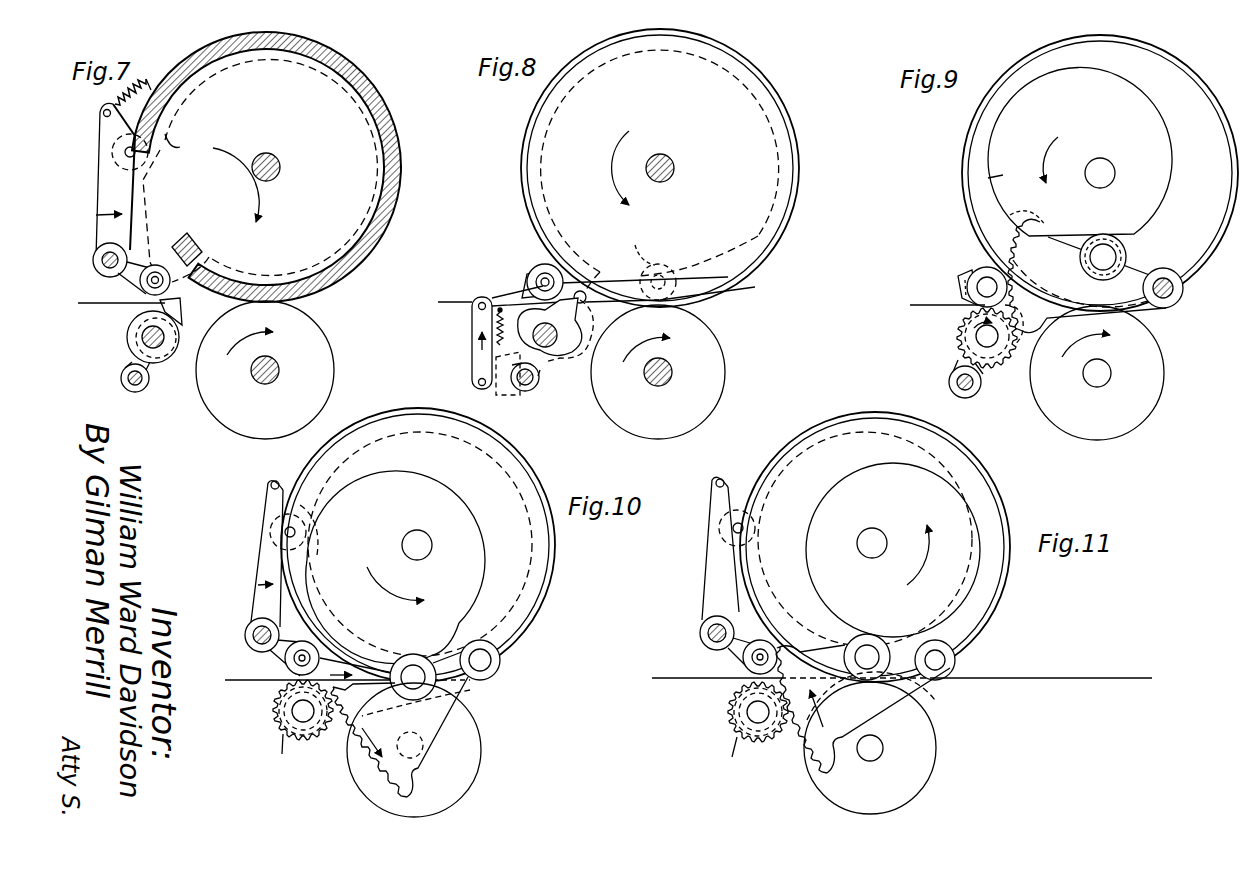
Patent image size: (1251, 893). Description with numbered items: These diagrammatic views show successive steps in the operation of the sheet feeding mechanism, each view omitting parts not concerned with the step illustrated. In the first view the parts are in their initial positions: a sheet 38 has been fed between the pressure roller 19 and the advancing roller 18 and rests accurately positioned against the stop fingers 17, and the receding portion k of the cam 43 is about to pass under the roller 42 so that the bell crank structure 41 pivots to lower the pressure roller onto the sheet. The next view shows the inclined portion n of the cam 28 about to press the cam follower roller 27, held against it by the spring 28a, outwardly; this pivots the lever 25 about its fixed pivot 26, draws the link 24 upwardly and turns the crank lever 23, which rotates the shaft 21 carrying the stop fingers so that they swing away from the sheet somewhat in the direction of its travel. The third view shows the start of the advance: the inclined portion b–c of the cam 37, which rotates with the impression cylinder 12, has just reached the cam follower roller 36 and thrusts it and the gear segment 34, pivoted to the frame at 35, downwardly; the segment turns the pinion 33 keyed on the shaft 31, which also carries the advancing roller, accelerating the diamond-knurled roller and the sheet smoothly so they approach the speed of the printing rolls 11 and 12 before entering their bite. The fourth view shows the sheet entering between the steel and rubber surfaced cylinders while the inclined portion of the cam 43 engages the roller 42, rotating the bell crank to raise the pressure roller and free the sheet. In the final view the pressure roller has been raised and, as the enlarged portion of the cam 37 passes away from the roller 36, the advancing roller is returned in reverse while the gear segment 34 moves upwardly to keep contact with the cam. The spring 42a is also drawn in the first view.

In FIG. 7, the printing roll 11 is at (332, 338).
In FIG. 8, the printing roll 11 is at (726, 362).
In FIG. 9, the printing roll 11 is at (1165, 361).
In FIG. 10, the printing roll 11 is at (481, 752).
In FIG. 11, the printing roll 11 is at (936, 748).
In FIG. 7, the impression cylinder 12 is at (401, 178).
In FIG. 8, the impression cylinder 12 is at (799, 174).
In FIG. 9, the impression cylinder 12 is at (1200, 258).
In FIG. 10, the impression cylinder 12 is at (553, 565).
In FIG. 11, the impression cylinder 12 is at (992, 622).
In FIG. 7, the stop fingers 17 is at (180, 308).
In FIG. 8, the stop fingers 17 is at (598, 330).
In FIG. 7, the advancing roller 18 is at (127, 342).
In FIG. 9, the advancing roller 18 is at (957, 322).
In FIG. 11, the advancing roller 18 is at (728, 690).
In FIG. 7, the pressure roller 19 is at (138, 286).
In FIG. 8, the pressure roller 19 is at (538, 266).
In FIG. 9, the pressure roller 19 is at (977, 270).
In FIG. 10, the pressure roller 19 is at (284, 668).
In FIG. 11, the pressure roller 19 is at (743, 668).
In FIG. 8, the shaft 21 is at (538, 390).
In FIG. 9, the shaft 21 is at (948, 384).
In FIG. 8, the crank lever 23 is at (510, 396).
In FIG. 8, the link 24 is at (472, 364).
In FIG. 8, the lever 25 is at (506, 297).
In FIG. 8, the pivot 26 is at (581, 290).
In FIG. 8, the cam follower roller 27 is at (690, 290).
In FIG. 8, the cam 28 is at (770, 136).
In FIG. 8, the spring 28a is at (490, 336).
In FIG. 9, the shaft 31 is at (976, 338).
In FIG. 10, the shaft 31 is at (293, 712).
In FIG. 11, the shaft 31 is at (748, 716).
In FIG. 9, the pinion 33 is at (968, 356).
In FIG. 10, the pinion 33 is at (305, 740).
In FIG. 11, the pinion 33 is at (760, 745).
In FIG. 9, the gear segment 34 is at (1010, 228).
In FIG. 10, the gear segment 34 is at (358, 765).
In FIG. 11, the gear segment 34 is at (800, 768).
In FIG. 9, the pivot 35 is at (1182, 296).
In FIG. 10, the pivot 35 is at (480, 660).
In FIG. 11, the pivot 35 is at (935, 660).
In FIG. 9, the cam follower roller 36 is at (1127, 249).
In FIG. 10, the cam follower roller 36 is at (413, 677).
In FIG. 11, the cam follower roller 36 is at (869, 640).
In FIG. 9, the cam 37 is at (1150, 185).
In FIG. 10, the cam 37 is at (420, 490).
In FIG. 11, the cam 37 is at (843, 492).
In FIG. 7, the sheet 38 is at (119, 314).
In FIG. 8, the sheet 38 is at (452, 302).
In FIG. 9, the sheet 38 is at (928, 305).
In FIG. 10, the sheet 38 is at (355, 688).
In FIG. 11, the sheet 38 is at (987, 683).
In FIG. 7, the bell crank structure 41 is at (106, 206).
In FIG. 10, the bell crank structure 41 is at (250, 604).
In FIG. 11, the bell crank structure 41 is at (702, 612).
In FIG. 7, the roller 42 is at (112, 142).
In FIG. 10, the roller 42 is at (270, 520).
In FIG. 11, the roller 42 is at (720, 540).
In FIG. 7, the spring 42a is at (148, 80).
In FIG. 7, the cam 43 is at (393, 115).
In FIG. 10, the cam 43 is at (327, 472).
In FIG. 7, the receding portion k is at (179, 148).
In FIG. 8, the inclined portion n is at (642, 244).
In FIG. 9, the inclined portion b is at (1114, 242).
In FIG. 9, the inclined portion c is at (1001, 175).